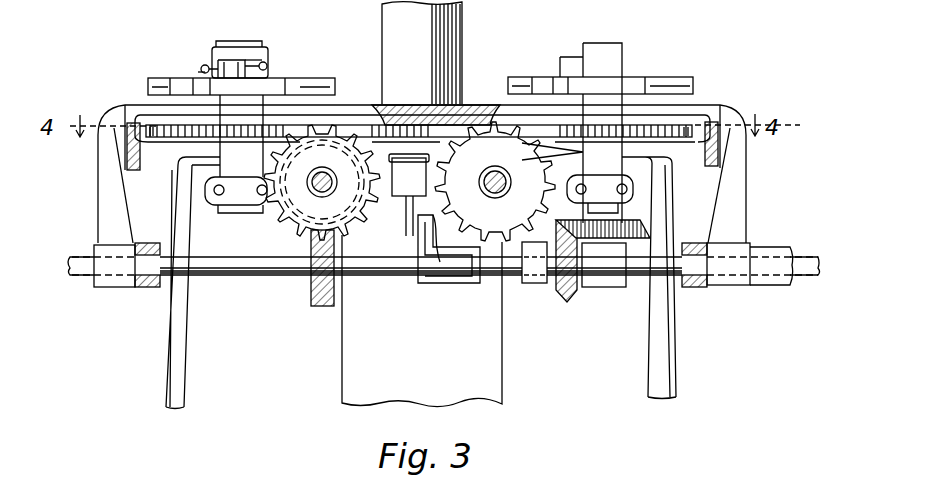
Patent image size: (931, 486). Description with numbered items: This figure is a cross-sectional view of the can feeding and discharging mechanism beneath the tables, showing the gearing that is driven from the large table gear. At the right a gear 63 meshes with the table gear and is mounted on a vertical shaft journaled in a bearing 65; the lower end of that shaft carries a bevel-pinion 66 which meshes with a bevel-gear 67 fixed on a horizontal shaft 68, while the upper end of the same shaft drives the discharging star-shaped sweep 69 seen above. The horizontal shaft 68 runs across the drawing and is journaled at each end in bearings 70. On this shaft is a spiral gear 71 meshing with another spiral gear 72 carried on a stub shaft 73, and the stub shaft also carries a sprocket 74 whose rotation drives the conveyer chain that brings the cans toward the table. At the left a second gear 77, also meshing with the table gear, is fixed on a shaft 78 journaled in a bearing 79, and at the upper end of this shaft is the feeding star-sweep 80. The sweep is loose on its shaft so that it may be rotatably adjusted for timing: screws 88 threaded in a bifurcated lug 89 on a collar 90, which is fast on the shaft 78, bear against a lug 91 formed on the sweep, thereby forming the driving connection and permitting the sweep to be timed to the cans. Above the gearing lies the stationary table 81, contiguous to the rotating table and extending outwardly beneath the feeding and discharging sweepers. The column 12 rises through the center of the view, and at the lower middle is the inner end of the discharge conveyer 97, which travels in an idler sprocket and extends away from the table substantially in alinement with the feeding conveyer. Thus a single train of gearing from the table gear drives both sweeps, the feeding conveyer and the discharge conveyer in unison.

The column 12 is at (462, 28).
The gear 63 is at (687, 125).
The bearing 65 is at (633, 193).
The bevel-pinion 66 is at (645, 233).
The bevel-gear 67 is at (568, 303).
The horizontal shaft 68 is at (632, 290).
The discharging star-shaped sweep 69 is at (672, 78).
The bearings 70 is at (118, 287).
The spiral gear 71 is at (320, 307).
The spiral gear 72 is at (278, 230).
The stub shaft 73 is at (332, 198).
The sprocket 74 is at (352, 240).
The gear 77 is at (153, 135).
The shaft 78 is at (255, 55).
The bearing 79 is at (238, 213).
The feeding star-sweep 80 is at (300, 80).
The stationary table 81 is at (356, 99).
The screws 88 is at (205, 65).
The bifurcated lug 89 is at (236, 58).
The collar 90 is at (268, 52).
The lug 91 is at (202, 73).
The discharge conveyer 97 is at (442, 283).